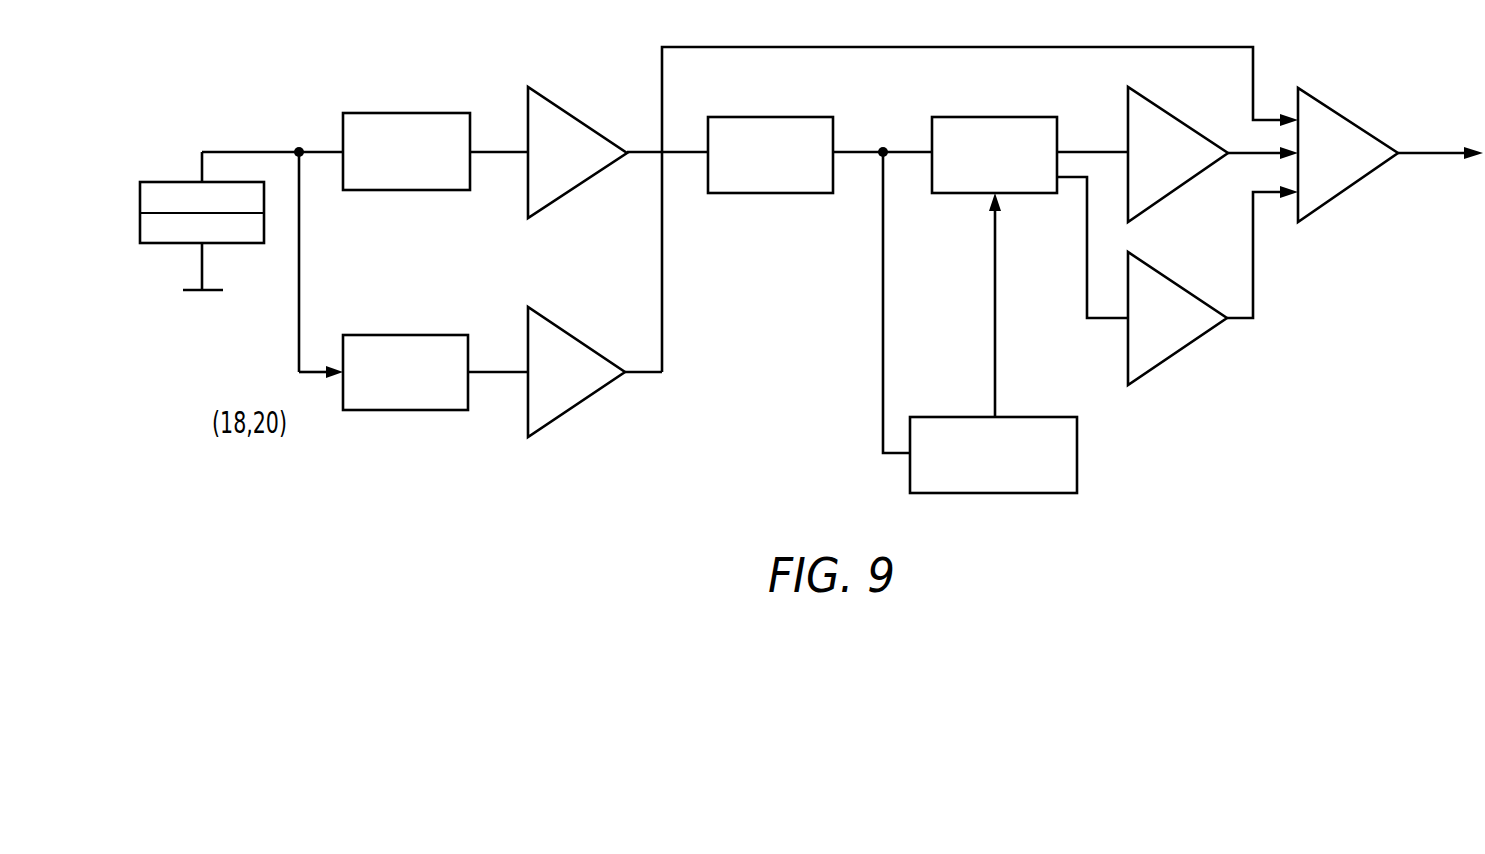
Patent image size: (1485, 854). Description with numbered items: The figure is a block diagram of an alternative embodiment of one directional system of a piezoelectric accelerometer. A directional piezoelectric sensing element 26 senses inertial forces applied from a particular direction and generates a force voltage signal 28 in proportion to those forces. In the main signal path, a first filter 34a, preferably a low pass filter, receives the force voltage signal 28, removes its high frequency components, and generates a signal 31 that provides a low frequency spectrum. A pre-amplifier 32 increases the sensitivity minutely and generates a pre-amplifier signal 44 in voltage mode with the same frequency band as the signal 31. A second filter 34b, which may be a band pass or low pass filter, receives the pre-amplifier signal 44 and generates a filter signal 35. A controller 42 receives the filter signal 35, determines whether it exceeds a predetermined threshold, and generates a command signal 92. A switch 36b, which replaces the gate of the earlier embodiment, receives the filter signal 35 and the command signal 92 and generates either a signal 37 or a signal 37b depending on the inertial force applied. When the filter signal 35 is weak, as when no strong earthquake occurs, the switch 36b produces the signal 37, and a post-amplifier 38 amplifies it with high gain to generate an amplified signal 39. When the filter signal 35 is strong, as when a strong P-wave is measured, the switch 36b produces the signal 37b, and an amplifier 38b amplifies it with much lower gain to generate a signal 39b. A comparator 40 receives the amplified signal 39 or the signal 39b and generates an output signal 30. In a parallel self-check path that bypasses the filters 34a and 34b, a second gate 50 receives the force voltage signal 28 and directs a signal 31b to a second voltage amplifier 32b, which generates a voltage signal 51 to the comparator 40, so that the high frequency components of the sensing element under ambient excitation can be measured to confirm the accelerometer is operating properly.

The third directional piezoelectric sensing element 26 is at (163, 244).
The force voltage signal 28 is at (317, 148).
The first filter 34a is at (412, 191).
The signal 31 is at (497, 148).
The pre-amplifier 32 is at (575, 187).
The pre-amplifier signal 44 is at (642, 150).
The voltage signal 51 is at (998, 47).
The second filter 34b is at (775, 194).
The filter signal 35 is at (900, 150).
The switch 36b is at (1032, 194).
The signal 37 is at (1080, 150).
The post-amplifier 38 is at (1180, 193).
The amplified signal 39 is at (1240, 150).
The comparator 40 is at (1350, 192).
The output signal 30 is at (1415, 152).
The signal 37b is at (1100, 320).
The amplifier 38b is at (1177, 353).
The signal 39b is at (1255, 262).
The command signal 92 is at (996, 292).
The controller 42 is at (1003, 494).
The second gate 50 is at (410, 411).
The signal 31b is at (495, 370).
The second voltage amplifier 32b is at (575, 407).